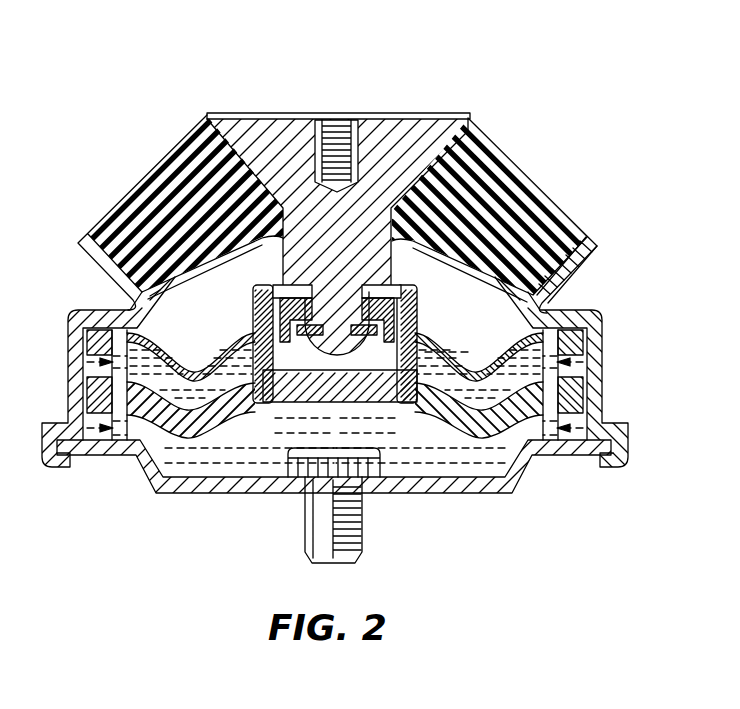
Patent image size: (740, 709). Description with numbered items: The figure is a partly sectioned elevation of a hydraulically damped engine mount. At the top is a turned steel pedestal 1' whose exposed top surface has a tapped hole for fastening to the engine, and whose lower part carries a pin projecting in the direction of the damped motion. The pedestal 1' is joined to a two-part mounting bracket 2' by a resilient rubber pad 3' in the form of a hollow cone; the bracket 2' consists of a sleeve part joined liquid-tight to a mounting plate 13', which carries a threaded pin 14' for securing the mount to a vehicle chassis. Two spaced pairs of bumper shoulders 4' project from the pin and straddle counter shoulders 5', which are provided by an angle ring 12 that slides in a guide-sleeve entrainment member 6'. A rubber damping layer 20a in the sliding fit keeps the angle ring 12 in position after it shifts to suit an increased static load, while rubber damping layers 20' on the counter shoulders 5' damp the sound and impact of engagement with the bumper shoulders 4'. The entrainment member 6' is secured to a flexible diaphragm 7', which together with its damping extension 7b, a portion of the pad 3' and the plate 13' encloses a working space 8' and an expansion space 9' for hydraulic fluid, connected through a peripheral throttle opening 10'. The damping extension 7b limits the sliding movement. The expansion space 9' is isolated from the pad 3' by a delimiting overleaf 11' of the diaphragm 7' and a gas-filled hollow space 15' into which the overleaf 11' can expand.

The pedestal 1' is at (338, 172).
The mounting bracket 2' is at (354, 368).
The resilient rubber pad 3' is at (180, 211).
The bumper shoulders 4' is at (324, 313).
The counter shoulders 5' is at (386, 313).
The entrainment member 6' is at (410, 292).
The diaphragm 7' is at (348, 454).
The damping extension 7b is at (340, 375).
The working space 8' is at (335, 450).
The expansion space 9' is at (472, 344).
The peripheral throttle opening 10' is at (373, 371).
The delimiting overleaf 11' is at (582, 274).
The angle ring 12 is at (414, 318).
The mounting plate 13' is at (334, 492).
The threaded pin 14' is at (304, 509).
The gas-filled hollow space 15' is at (180, 308).
The rubber damping layer 20' is at (337, 302).
The rubber damping layer 20a is at (254, 340).